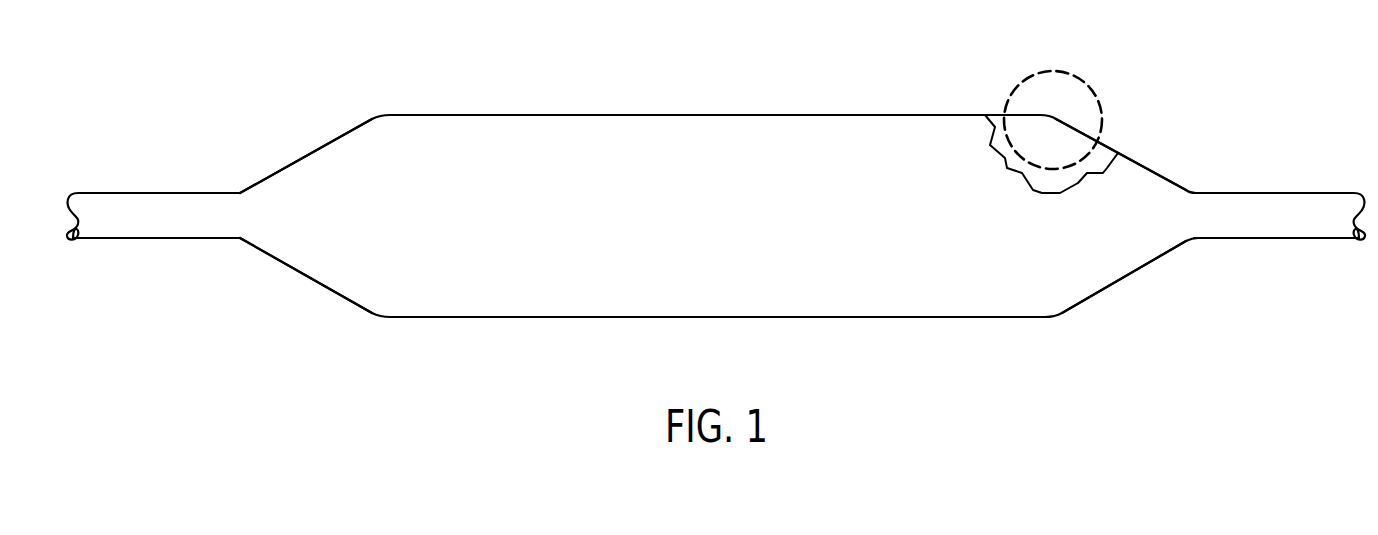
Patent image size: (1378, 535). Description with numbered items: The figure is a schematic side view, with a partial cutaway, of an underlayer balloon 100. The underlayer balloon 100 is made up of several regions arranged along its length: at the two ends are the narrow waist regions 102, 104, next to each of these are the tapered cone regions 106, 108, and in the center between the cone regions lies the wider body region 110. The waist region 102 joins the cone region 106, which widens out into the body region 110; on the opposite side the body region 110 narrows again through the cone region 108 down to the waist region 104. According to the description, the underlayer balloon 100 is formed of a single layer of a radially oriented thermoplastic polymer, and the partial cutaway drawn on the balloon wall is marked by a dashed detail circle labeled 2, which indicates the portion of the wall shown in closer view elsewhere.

The underlayer balloon 100 is at (736, 220).
The waist region 102 is at (142, 192).
The waist region 104 is at (1288, 192).
The cone region 106 is at (303, 158).
The cone region 108 is at (1150, 170).
The body region 110 is at (665, 114).
The detail region shown in FIG. 2 is at (1091, 89).